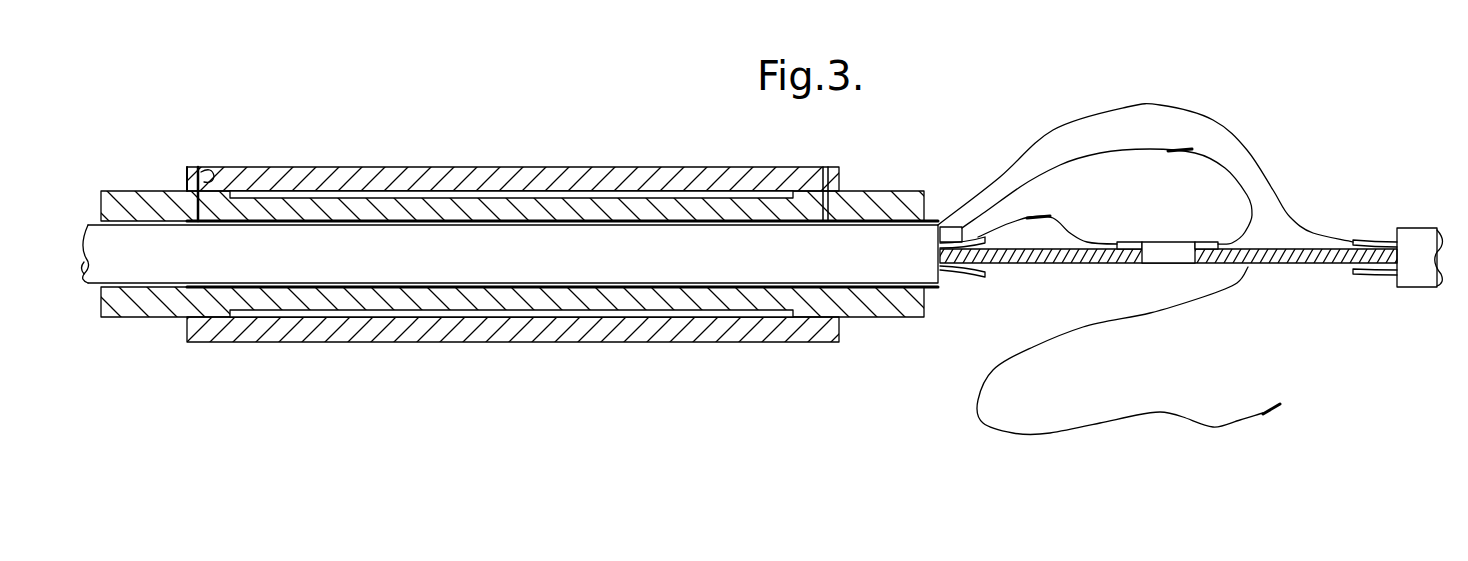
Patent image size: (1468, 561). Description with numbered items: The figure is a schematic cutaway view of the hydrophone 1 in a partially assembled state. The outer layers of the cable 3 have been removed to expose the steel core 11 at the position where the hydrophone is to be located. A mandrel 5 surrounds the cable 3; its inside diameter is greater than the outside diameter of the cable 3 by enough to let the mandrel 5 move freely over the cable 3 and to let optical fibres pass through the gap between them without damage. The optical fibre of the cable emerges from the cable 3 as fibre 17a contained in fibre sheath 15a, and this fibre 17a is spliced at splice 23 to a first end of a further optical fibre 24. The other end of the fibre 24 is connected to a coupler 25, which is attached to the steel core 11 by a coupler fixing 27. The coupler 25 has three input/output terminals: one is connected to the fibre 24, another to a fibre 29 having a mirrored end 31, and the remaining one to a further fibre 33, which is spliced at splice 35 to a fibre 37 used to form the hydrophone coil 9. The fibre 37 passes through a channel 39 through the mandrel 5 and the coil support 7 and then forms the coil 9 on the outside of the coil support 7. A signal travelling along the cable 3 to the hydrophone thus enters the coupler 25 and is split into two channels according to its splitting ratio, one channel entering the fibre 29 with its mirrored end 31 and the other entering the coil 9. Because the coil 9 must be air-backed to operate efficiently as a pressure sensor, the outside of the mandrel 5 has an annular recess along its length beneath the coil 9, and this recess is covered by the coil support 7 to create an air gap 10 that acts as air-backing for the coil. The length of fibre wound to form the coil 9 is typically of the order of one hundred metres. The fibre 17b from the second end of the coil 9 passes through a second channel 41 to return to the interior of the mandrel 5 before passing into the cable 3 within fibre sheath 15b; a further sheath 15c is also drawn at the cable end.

The catheter assembly 1 is at (231, 90).
The cable 3 is at (120, 264).
The mandrel 5 is at (139, 318).
The coil support 7 is at (187, 178).
The hydrophone coil 9 is at (305, 166).
The air gap 10 is at (427, 192).
The steel core 11 is at (1168, 273).
The fibre sheath 15a is at (963, 240).
The fibre sheath 15b is at (1378, 243).
The third port tube 15c is at (1368, 273).
The fibre 17a is at (1002, 226).
The fibre 17b is at (1313, 229).
The splice 23 is at (1043, 214).
The further optical fibre 24 is at (1087, 236).
The coupler 25 is at (1134, 241).
The coupler fixing 27 is at (1167, 263).
The fibre 29 is at (1065, 337).
The mirrored end 31 is at (1272, 412).
The further fibre 33 is at (1250, 206).
The splice 35 is at (1180, 148).
The fibre 37 is at (1058, 163).
The channel 39 is at (208, 172).
The second channel 41 is at (835, 184).